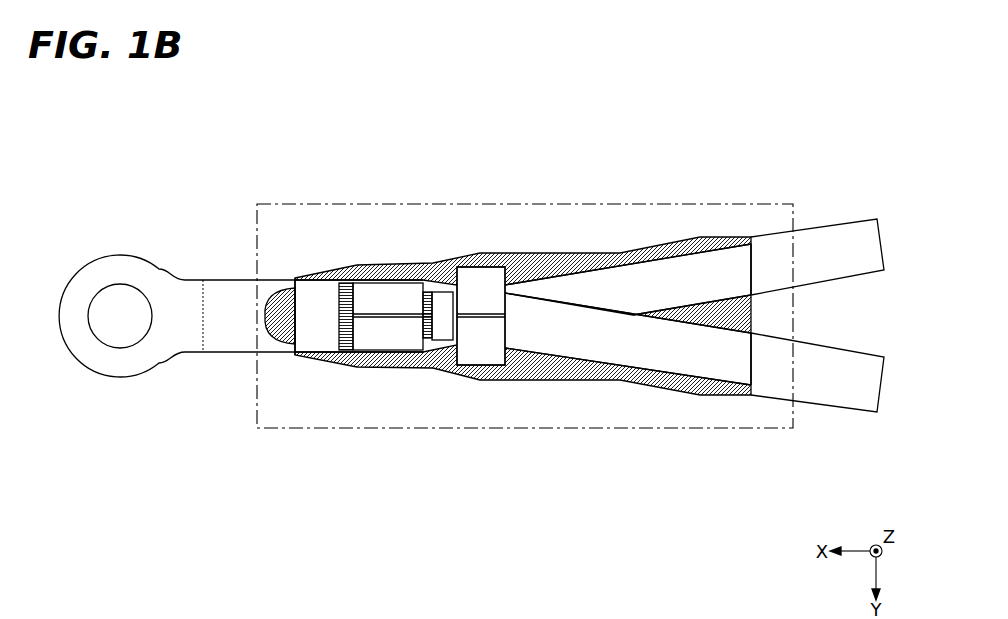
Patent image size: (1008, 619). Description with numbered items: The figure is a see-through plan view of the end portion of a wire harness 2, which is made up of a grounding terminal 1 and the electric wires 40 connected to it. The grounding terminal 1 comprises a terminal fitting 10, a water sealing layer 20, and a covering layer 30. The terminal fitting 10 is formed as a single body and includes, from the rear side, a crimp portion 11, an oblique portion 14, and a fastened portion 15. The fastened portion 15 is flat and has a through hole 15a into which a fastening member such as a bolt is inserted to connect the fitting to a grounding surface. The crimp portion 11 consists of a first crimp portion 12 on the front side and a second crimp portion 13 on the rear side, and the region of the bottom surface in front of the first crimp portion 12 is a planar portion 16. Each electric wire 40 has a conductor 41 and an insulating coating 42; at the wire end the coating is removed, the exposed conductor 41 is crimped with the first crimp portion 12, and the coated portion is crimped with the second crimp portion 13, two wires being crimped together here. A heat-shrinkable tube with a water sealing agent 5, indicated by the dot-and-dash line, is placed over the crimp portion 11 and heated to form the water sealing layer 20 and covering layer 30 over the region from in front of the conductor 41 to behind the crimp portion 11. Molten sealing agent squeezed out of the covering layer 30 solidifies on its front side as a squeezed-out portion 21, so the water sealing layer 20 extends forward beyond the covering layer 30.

The grounding terminal 1 is at (523, 247).
The wire harness 2 is at (752, 186).
The heat-shrinkable tube with a water sealing agent 5 is at (575, 203).
The terminal fitting 10 is at (413, 276).
The crimp portion 11 is at (429, 400).
The first crimp portion 12 is at (388, 331).
The second crimp portion 13 is at (483, 343).
The oblique portion 14 is at (235, 298).
The fastened portion 15 is at (123, 270).
The through hole 15a is at (110, 302).
The planar portion 16 is at (269, 290).
The water sealing layer 20 is at (372, 266).
The squeezed-out portion 21 is at (270, 329).
The covering layer 30 is at (610, 264).
The electric wire 40 is at (827, 227).
The conductor 41 is at (342, 346).
The insulating coating 42 is at (808, 248).